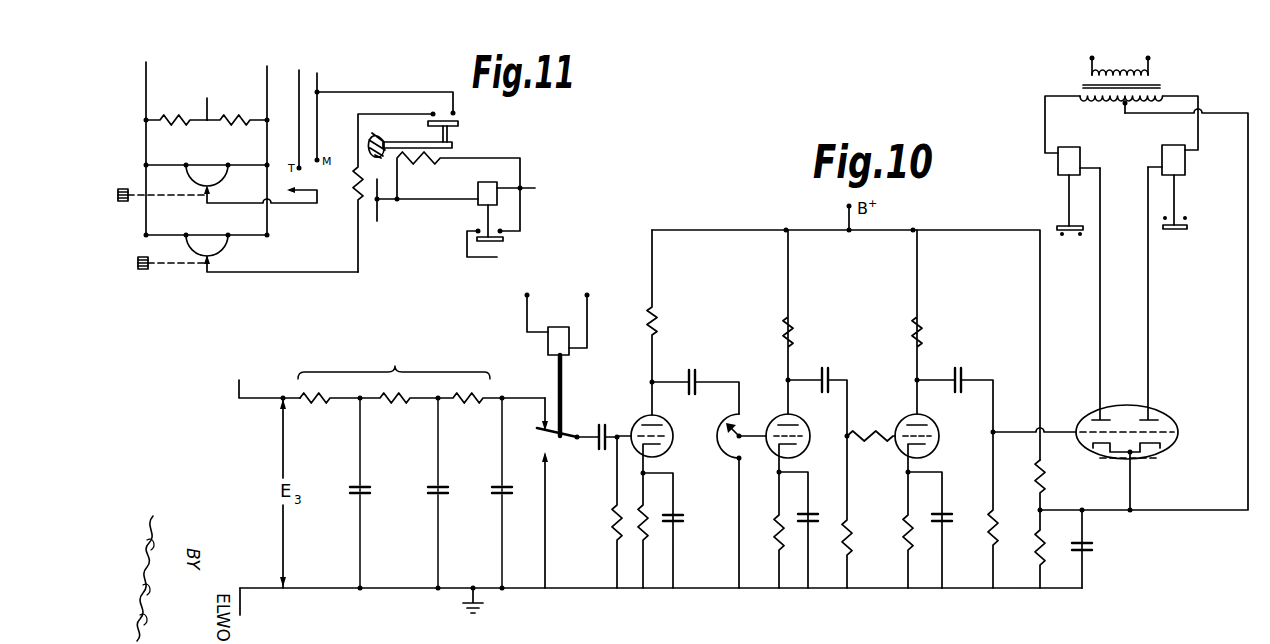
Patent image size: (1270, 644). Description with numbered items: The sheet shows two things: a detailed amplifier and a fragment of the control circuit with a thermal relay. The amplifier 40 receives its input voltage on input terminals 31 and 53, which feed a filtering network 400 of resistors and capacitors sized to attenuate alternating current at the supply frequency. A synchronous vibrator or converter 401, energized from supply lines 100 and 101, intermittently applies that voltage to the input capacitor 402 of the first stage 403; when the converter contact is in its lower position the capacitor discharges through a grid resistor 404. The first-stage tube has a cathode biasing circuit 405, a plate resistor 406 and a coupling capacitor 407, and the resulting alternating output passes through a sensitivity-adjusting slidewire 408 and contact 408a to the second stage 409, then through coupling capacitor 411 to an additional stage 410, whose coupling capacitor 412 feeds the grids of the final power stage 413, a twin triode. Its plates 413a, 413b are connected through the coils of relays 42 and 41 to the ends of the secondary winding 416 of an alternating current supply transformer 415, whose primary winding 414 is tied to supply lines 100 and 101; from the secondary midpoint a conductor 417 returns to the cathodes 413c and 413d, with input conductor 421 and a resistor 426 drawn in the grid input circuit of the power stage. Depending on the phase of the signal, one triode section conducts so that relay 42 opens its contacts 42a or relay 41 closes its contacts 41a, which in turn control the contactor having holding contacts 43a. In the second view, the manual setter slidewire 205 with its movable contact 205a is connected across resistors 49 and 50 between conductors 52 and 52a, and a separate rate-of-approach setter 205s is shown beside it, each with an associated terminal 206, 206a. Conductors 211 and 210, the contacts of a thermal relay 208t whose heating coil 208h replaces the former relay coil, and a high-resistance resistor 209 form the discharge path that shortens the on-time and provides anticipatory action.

In FIG. 11, the conductor 52 is at (146, 92).
In FIG. 11, the conductor 52a is at (268, 78).
In FIG. 11, the resistor 49 is at (162, 116).
In FIG. 11, the resistor 50 is at (224, 116).
In FIG. 11, the slidewire 205 is at (223, 176).
In FIG. 11, the movable contact 205a is at (210, 197).
In FIG. 11, the rate-of-approach setter 205s is at (228, 253).
In FIG. 11, the terminal 206 is at (123, 188).
In FIG. 11, the terminal 206a is at (144, 272).
In FIG. 11, the conductor 211 is at (318, 84).
In FIG. 11, the conductor 210 is at (381, 92).
In FIG. 11, the high-resistance resistor 209 is at (355, 191).
In FIG. 11, the thermal relay 208t is at (454, 143).
In FIG. 11, the heating coil 208h is at (407, 162).
In FIG. 11, the holding contacts 43a is at (479, 245).
In FIG. 10, the amplifier 40 is at (778, 207).
In FIG. 10, the input terminal 53 is at (237, 386).
In FIG. 10, the filtering network 400 is at (421, 467).
In FIG. 10, the input terminal 31 is at (242, 603).
In FIG. 10, the synchronous vibrator or converter 401 is at (563, 397).
In FIG. 10, the input capacitor 402 is at (601, 456).
In FIG. 10, the first stage 403 is at (712, 422).
In FIG. 10, the grid resistor 404 is at (613, 518).
In FIG. 10, the cathode biasing circuit 405 is at (664, 535).
In FIG. 10, the plate resistor 406 is at (656, 333).
In FIG. 10, the coupling capacitor 407 is at (692, 370).
In FIG. 10, the slidewire 408 is at (726, 452).
In FIG. 10, the contact 408a is at (735, 425).
In FIG. 10, the second stage 409 is at (848, 419).
In FIG. 10, the additional stage 410 is at (985, 422).
In FIG. 10, the coupling capacitor 411 is at (826, 368).
In FIG. 10, the coupling capacitor 412 is at (959, 366).
In FIG. 10, the final power stage 413 is at (1148, 396).
In FIG. 10, the plate 413a is at (1095, 416).
In FIG. 10, the plate 413b is at (1160, 416).
In FIG. 10, the cathode 413c is at (1106, 448).
In FIG. 10, the cathode 413d is at (1153, 448).
In FIG. 10, the input conductor 421 is at (1108, 510).
In FIG. 10, the resistor 426 is at (1053, 434).
In FIG. 10, the conductor 417 is at (1247, 363).
In FIG. 10, the primary winding 414 is at (1129, 72).
In FIG. 10, the alternating current supply transformer 415 is at (1083, 86).
In FIG. 10, the secondary winding 416 is at (1107, 102).
In FIG. 10, the supply line 100 is at (1090, 56).
In FIG. 10, the supply line 101 is at (1150, 57).
In FIG. 10, the relay 41 is at (1173, 160).
In FIG. 10, the contacts 41a is at (1170, 236).
In FIG. 10, the relay 42 is at (1073, 157).
In FIG. 10, the contacts 42a is at (1073, 237).